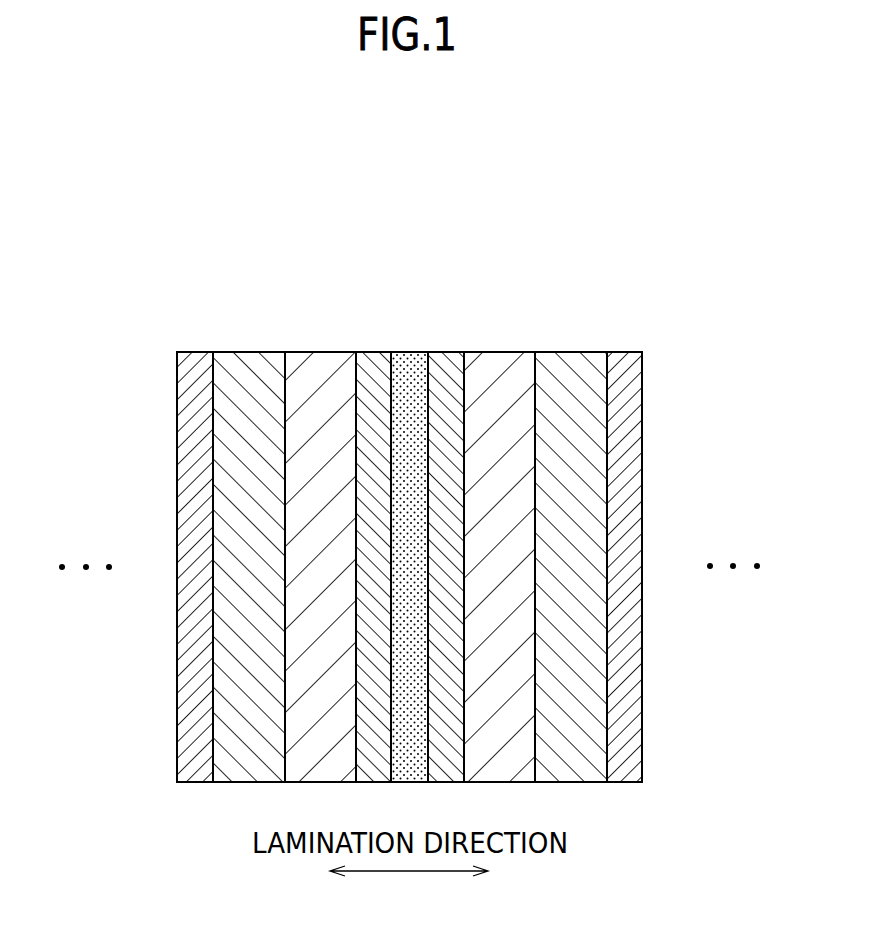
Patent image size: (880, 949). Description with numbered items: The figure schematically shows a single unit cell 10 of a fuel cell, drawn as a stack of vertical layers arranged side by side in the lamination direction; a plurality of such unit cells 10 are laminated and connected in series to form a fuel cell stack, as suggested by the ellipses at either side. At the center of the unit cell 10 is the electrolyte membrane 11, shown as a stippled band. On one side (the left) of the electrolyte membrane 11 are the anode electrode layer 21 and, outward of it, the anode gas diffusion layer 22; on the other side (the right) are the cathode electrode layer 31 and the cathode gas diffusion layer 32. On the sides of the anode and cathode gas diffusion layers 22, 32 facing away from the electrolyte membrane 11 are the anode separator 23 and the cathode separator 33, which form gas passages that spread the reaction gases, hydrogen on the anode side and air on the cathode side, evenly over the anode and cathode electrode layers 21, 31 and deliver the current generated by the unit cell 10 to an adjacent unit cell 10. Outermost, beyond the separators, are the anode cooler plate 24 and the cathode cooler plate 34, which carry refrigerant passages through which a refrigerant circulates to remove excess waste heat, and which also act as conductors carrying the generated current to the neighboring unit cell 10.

The unit cell 10 is at (580, 162).
The electrolyte membrane 11 is at (413, 360).
The anode electrode layer 21 is at (375, 363).
The anode gas diffusion layer 22 is at (318, 363).
The anode separator 23 is at (250, 360).
The anode cooler plate 24 is at (197, 362).
The cathode electrode layer 31 is at (450, 363).
The cathode gas diffusion layer 32 is at (498, 363).
The cathode separator 33 is at (570, 360).
The cathode cooler plate 34 is at (625, 363).